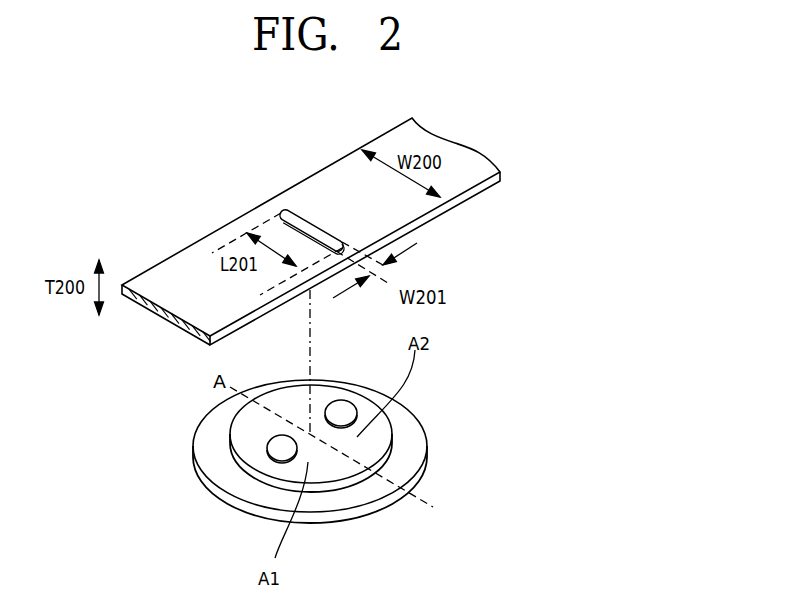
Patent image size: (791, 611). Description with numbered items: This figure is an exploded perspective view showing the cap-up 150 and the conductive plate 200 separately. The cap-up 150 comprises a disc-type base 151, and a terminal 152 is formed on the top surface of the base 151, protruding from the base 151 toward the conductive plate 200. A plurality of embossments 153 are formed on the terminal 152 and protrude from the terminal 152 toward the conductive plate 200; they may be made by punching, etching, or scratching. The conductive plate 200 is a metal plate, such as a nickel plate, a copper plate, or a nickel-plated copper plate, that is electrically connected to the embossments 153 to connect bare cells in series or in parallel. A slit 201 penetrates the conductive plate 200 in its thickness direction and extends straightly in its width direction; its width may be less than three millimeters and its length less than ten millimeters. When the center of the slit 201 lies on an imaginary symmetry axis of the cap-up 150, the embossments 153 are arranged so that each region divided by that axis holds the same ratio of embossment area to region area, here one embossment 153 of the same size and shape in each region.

The conductive plate 200 is at (205, 213).
The slit 201 is at (308, 225).
The cap-up 150 is at (327, 422).
The base 151 is at (410, 453).
The terminal 152 is at (373, 427).
The embossments 153 is at (272, 449).